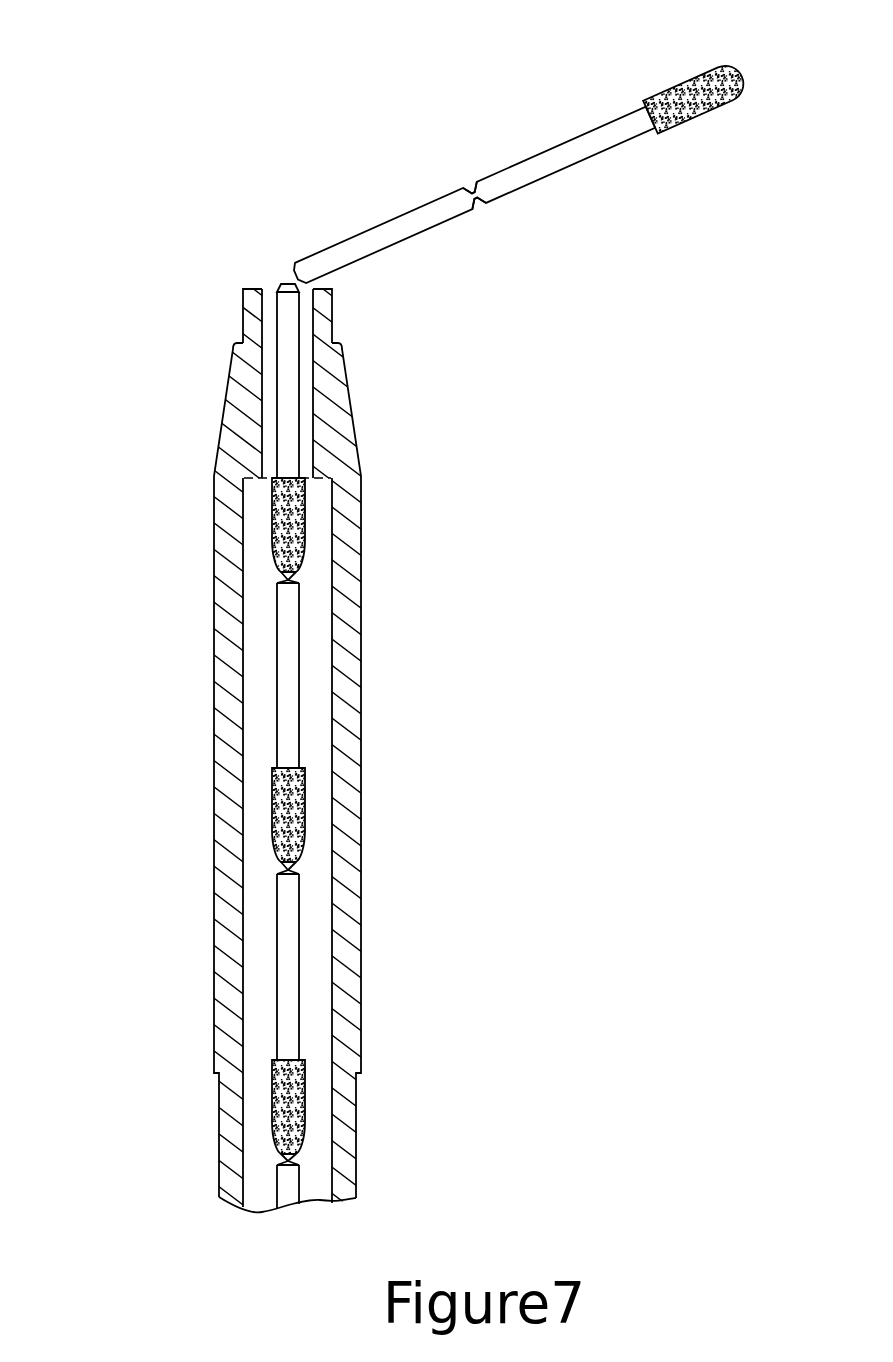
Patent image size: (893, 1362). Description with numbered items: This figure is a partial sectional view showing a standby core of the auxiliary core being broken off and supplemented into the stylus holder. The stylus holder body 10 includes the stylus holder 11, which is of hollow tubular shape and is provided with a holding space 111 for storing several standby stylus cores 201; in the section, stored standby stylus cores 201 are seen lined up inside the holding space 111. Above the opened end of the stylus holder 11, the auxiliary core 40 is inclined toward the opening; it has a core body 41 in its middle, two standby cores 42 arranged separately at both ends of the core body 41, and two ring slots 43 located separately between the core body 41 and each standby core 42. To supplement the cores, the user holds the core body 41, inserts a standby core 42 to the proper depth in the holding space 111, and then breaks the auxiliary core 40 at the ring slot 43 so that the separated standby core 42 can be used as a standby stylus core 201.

The stylus holder body 10 is at (274, 736).
The stylus holder 11 is at (222, 620).
The holding space 111 is at (313, 628).
The standby stylus core 201 is at (290, 705).
The auxiliary core 40 is at (473, 170).
The core body 41 is at (323, 257).
The standby core 42 is at (572, 145).
The ring slot 43 is at (472, 185).